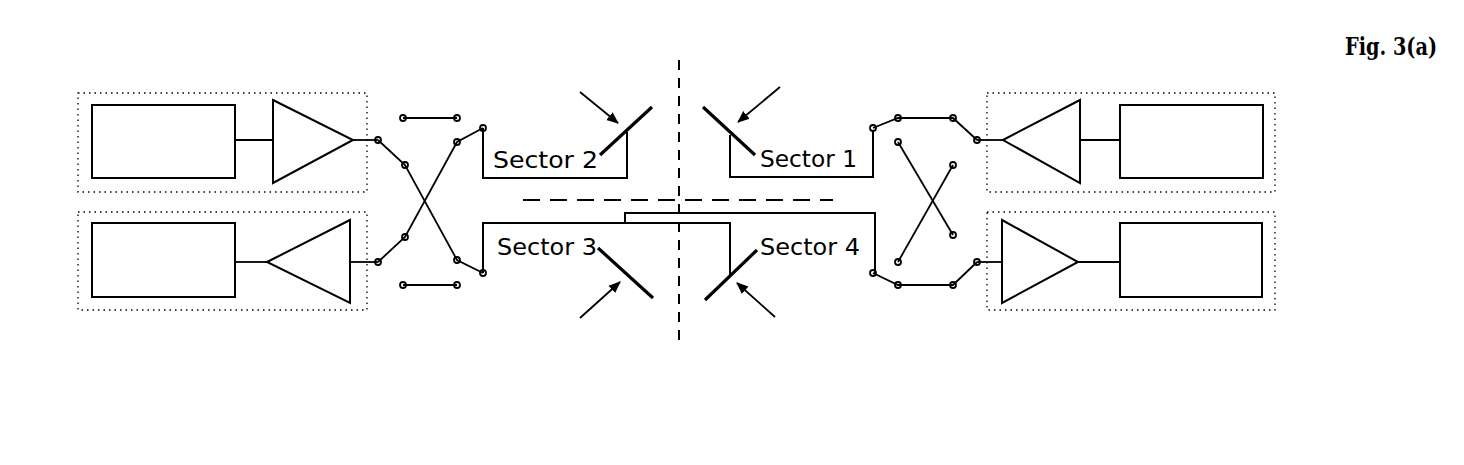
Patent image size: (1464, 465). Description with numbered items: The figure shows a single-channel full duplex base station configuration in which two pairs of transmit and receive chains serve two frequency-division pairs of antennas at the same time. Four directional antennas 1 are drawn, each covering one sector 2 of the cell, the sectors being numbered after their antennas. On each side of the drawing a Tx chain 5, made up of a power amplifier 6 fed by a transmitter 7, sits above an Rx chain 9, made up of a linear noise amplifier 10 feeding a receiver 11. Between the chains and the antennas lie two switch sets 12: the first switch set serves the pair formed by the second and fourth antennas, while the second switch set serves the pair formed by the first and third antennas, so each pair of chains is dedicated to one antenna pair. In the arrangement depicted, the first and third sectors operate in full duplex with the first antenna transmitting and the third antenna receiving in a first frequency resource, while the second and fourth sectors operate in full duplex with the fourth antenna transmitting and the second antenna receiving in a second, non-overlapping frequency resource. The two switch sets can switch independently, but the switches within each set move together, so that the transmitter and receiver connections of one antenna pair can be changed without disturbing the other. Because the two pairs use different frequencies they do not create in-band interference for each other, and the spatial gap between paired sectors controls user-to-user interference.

The directional antenna 1 is at (674, 97).
The sector 2 is at (675, 307).
The Tx chain 5 is at (676, 126).
The power amplifier 6 is at (677, 141).
The transmitter 7 is at (677, 141).
The Rx chain 9 is at (676, 279).
The linear noise amplifier 10 is at (677, 264).
The receiver 11 is at (677, 260).
The switch set 12 is at (677, 231).